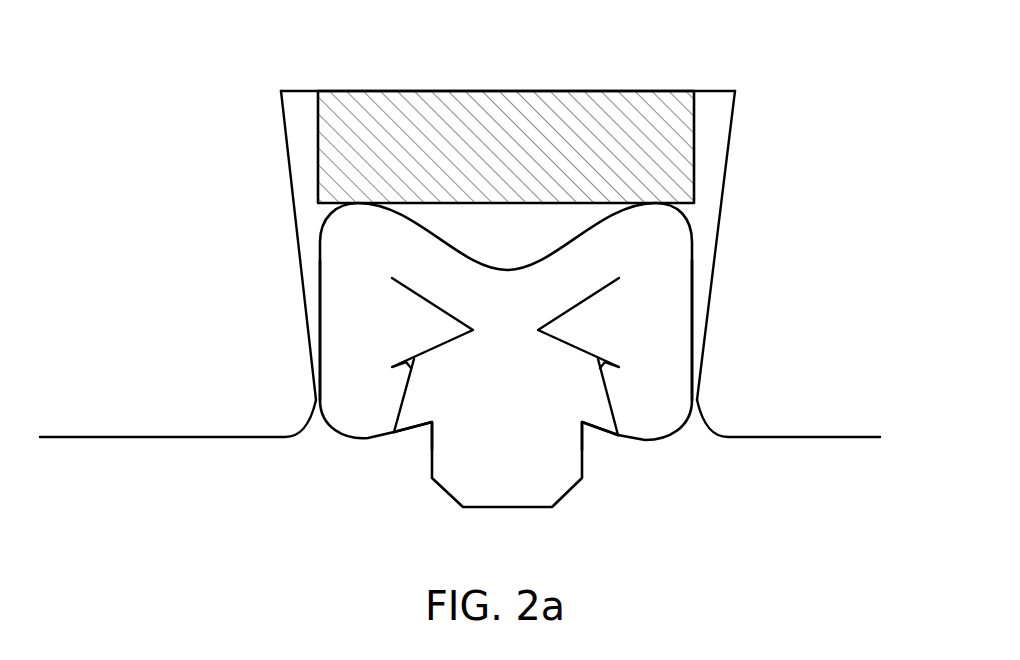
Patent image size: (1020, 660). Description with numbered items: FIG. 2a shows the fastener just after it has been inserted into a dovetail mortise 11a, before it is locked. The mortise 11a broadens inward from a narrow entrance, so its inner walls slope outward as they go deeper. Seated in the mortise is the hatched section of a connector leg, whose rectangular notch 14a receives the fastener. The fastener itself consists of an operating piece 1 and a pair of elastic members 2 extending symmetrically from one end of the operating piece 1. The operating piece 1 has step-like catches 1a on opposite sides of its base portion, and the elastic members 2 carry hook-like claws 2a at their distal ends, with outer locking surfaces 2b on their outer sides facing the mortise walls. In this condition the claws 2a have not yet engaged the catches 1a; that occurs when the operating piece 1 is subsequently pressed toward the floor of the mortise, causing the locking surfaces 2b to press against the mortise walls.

The operating piece 1 is at (506, 492).
The step-like catch 1a is at (402, 438).
The elastic member 2 is at (327, 252).
The claw 2a is at (408, 384).
The outer locking surface 2b is at (319, 294).
The dovetail mortise 11a is at (700, 262).
The rectangular notch 14a is at (371, 89).